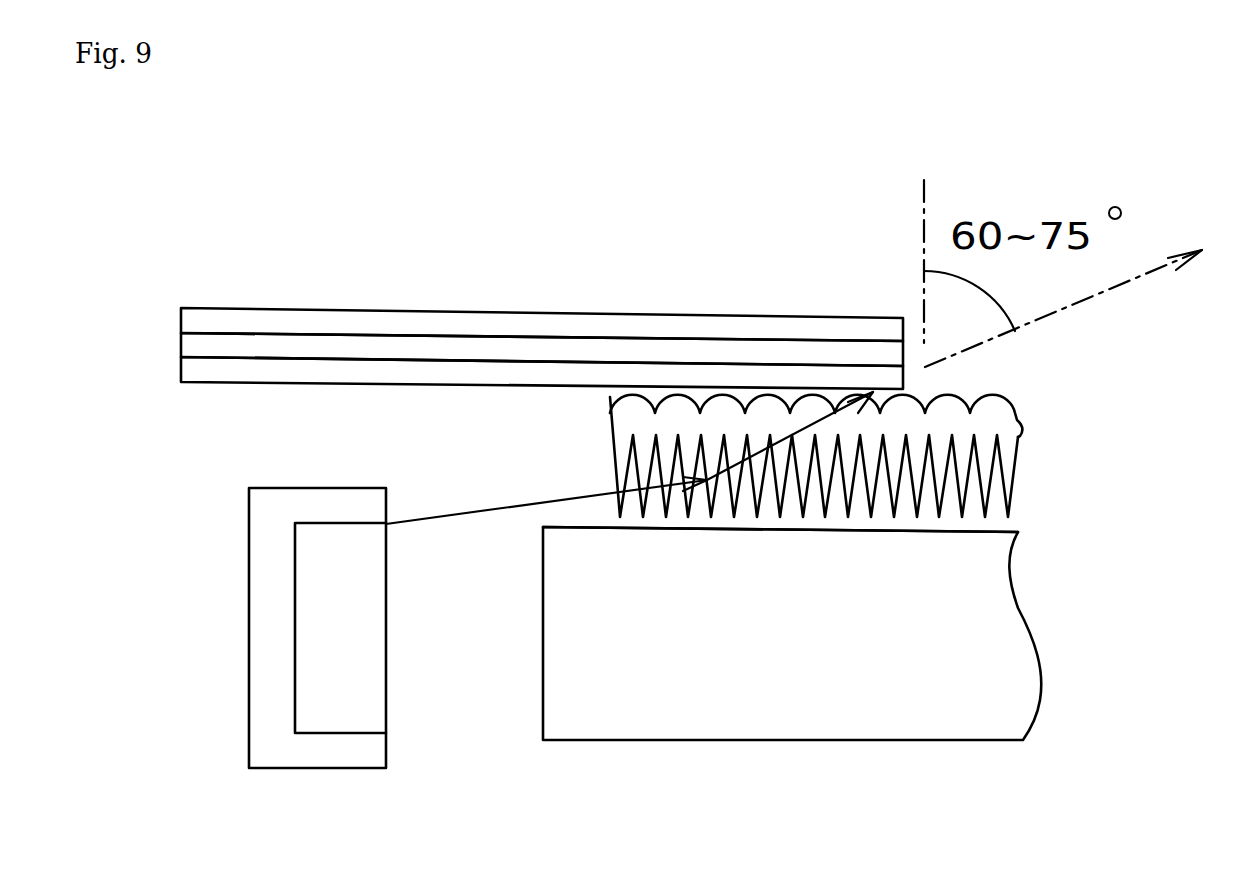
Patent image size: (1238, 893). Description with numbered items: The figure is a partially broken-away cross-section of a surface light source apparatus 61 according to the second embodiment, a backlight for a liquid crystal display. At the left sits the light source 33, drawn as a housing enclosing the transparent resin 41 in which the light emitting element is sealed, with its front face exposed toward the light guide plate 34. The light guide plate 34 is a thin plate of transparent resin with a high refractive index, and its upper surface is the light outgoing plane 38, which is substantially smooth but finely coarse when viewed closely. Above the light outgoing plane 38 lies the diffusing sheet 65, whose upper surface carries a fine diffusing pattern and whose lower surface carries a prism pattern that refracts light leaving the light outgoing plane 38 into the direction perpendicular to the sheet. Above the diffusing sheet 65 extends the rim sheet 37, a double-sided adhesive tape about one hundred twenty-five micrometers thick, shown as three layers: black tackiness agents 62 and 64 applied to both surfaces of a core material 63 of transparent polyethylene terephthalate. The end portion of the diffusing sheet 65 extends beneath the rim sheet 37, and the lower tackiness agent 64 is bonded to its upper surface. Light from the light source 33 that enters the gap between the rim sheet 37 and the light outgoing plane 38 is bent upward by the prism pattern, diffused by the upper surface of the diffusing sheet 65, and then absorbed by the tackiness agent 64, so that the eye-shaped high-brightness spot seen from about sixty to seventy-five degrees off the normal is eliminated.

The surface light source apparatus 61 is at (228, 190).
The rim sheet 37 is at (662, 203).
The black tackiness agent 62 is at (479, 326).
The core material 63 is at (540, 348).
The black tackiness agent 64 is at (598, 378).
The diffusing sheet 65 is at (977, 431).
The light guide plate 34 is at (816, 675).
The light outgoing plane 38 is at (858, 533).
The light source 33 is at (249, 608).
The transparent resin 41 is at (333, 658).